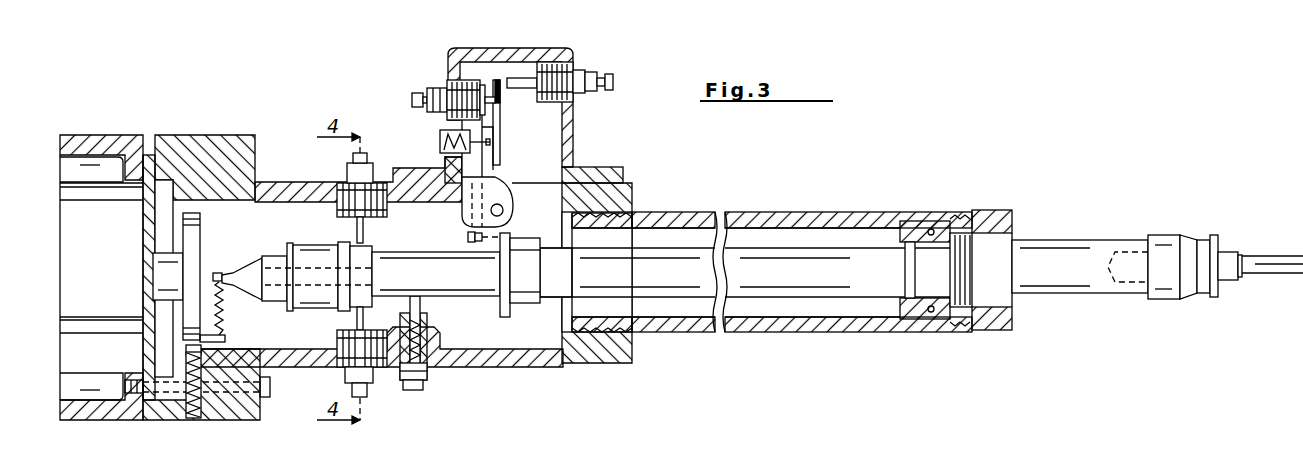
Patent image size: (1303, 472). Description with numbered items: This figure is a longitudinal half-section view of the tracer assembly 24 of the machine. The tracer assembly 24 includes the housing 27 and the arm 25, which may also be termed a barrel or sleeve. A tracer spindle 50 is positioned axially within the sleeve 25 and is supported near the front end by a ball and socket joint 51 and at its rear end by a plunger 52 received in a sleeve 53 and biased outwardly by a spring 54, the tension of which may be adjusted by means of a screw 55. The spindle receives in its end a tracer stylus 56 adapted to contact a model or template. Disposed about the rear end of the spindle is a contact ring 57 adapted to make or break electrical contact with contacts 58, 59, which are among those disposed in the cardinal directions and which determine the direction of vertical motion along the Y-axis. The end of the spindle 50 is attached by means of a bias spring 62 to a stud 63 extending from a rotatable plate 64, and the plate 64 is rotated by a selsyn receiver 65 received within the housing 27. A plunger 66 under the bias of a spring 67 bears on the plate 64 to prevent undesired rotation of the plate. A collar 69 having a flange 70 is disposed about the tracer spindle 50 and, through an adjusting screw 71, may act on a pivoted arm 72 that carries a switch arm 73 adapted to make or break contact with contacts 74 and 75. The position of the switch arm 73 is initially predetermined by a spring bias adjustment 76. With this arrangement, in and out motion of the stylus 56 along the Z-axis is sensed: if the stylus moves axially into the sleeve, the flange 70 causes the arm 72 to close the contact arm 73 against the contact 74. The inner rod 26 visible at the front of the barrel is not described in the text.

The tracer assembly 24 is at (176, 91).
The arm 25 is at (822, 212).
The inner rod 26 is at (1113, 230).
The housing 27 is at (128, 140).
The tracer spindle 50 is at (828, 297).
The ball and socket joint 51 is at (931, 312).
The plunger 52 is at (417, 310).
The sleeve 53 is at (426, 372).
The spring 54 is at (428, 340).
The screw 55 is at (418, 390).
The tracer stylus 56 is at (1277, 256).
The contact ring 57 is at (366, 253).
The contact 58 is at (337, 218).
The contact 59 is at (350, 322).
The bias spring 62 is at (223, 305).
The stud 63 is at (226, 338).
The rotatable plate 64 is at (202, 231).
The selsyn receiver 65 is at (108, 285).
The plunger 66 is at (187, 352).
The spring 67 is at (187, 390).
The collar 69 is at (522, 292).
The flange 70 is at (512, 262).
The adjusting screw 71 is at (468, 237).
The pivoted arm 72 is at (490, 174).
The switch arm 73 is at (500, 122).
The contact 74 is at (487, 88).
The contact 75 is at (524, 72).
The spring bias adjustment 76 is at (440, 143).